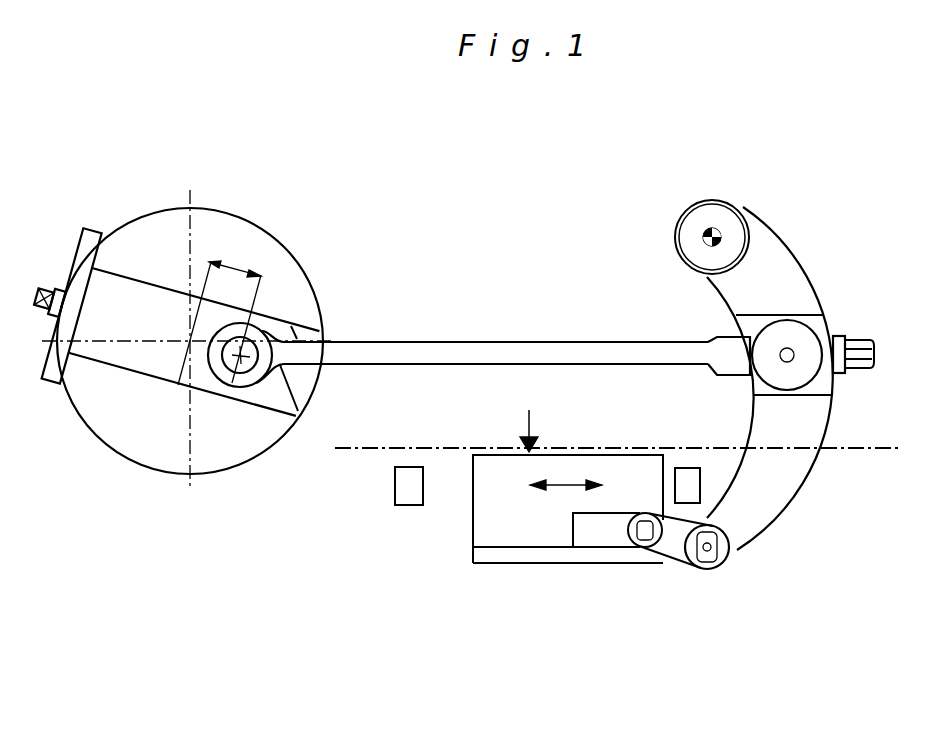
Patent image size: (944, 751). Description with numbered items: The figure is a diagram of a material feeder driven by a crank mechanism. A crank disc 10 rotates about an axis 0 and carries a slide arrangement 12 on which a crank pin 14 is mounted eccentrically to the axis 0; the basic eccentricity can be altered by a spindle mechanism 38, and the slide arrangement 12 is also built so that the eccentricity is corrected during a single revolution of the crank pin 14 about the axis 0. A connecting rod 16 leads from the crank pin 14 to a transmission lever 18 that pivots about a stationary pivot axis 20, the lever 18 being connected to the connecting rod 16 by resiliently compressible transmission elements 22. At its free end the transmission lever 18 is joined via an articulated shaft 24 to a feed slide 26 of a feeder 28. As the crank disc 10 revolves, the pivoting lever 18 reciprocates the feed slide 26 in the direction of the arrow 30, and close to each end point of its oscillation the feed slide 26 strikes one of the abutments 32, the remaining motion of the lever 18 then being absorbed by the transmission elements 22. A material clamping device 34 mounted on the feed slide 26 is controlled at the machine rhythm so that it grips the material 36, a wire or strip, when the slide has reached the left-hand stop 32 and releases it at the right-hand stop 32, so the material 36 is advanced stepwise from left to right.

The crank disc 10 is at (160, 213).
The axis 0 is at (188, 340).
The slide arrangement 12 is at (135, 376).
The crank pin 14 is at (247, 367).
The connecting rod 16 is at (468, 348).
The transmission lever 18 is at (808, 412).
The stationary pivot axis 20 is at (712, 237).
The transmission elements 22 is at (840, 337).
The articulated shaft 24 is at (677, 550).
The feed slide 26 is at (485, 525).
The feeder 28 is at (563, 566).
The arrow 30 is at (567, 487).
The abutments 32 is at (402, 493).
The material clamping device 34 is at (533, 423).
The material 36 is at (417, 445).
The spindle mechanism 38 is at (47, 287).